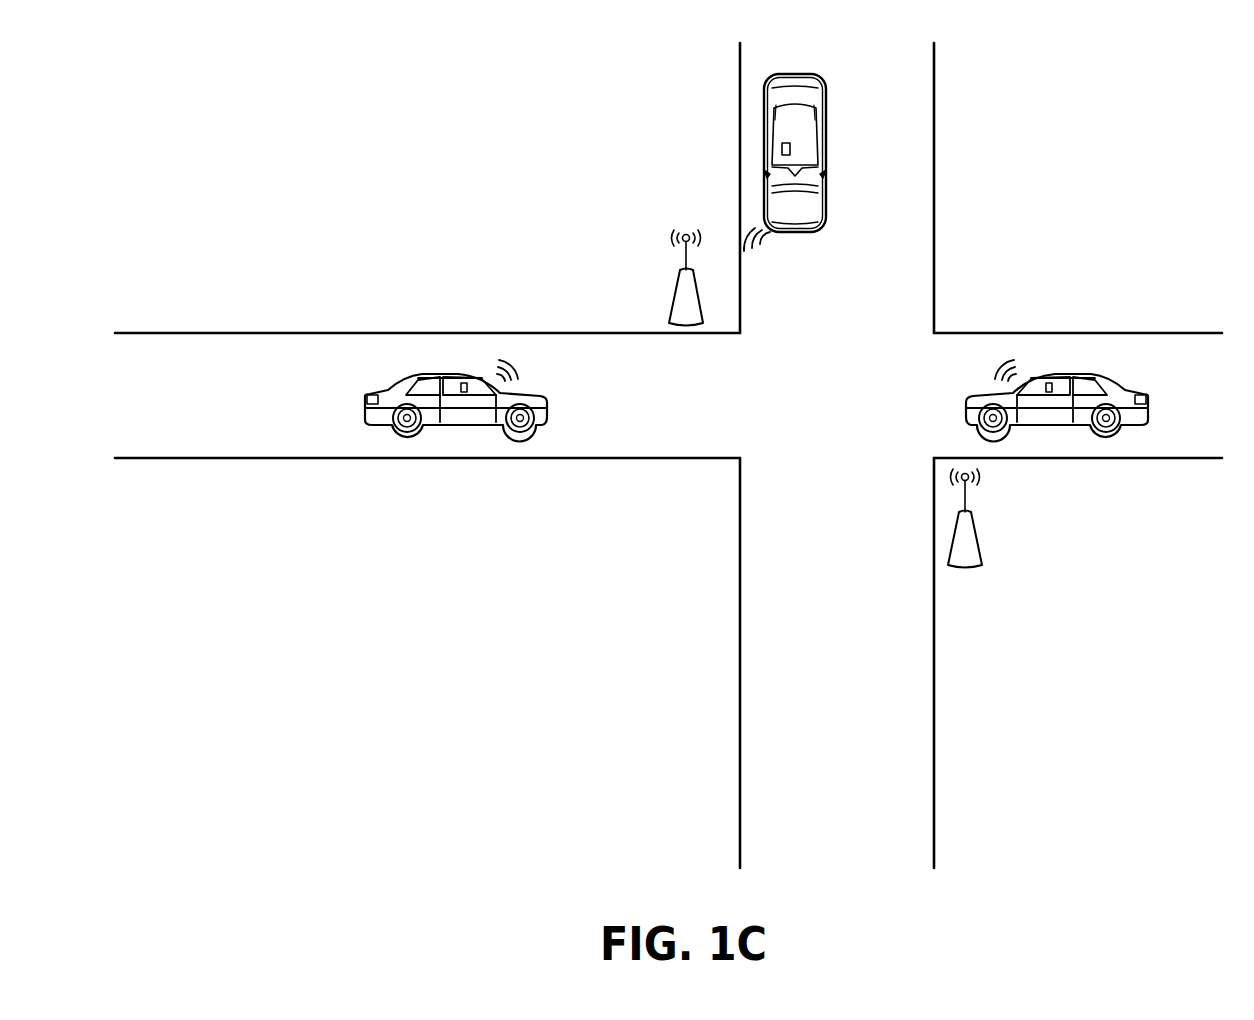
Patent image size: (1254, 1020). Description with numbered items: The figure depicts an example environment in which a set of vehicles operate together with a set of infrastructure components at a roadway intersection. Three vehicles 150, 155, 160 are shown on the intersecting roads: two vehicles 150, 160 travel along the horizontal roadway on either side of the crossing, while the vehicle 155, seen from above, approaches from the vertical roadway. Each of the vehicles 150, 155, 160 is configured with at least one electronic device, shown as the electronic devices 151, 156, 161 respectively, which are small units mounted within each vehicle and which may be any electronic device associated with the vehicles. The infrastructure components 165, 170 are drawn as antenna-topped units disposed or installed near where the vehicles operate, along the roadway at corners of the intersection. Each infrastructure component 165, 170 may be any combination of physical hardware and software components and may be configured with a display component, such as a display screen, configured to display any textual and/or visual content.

The vehicle 150 is at (425, 375).
The electronic device 151 is at (461, 392).
The vehicle 155 is at (824, 140).
The electronic device 156 is at (782, 150).
The vehicle 160 is at (1090, 375).
The electronic device 161 is at (1052, 392).
The infrastructure component 165 is at (679, 305).
The infrastructure component 170 is at (970, 545).